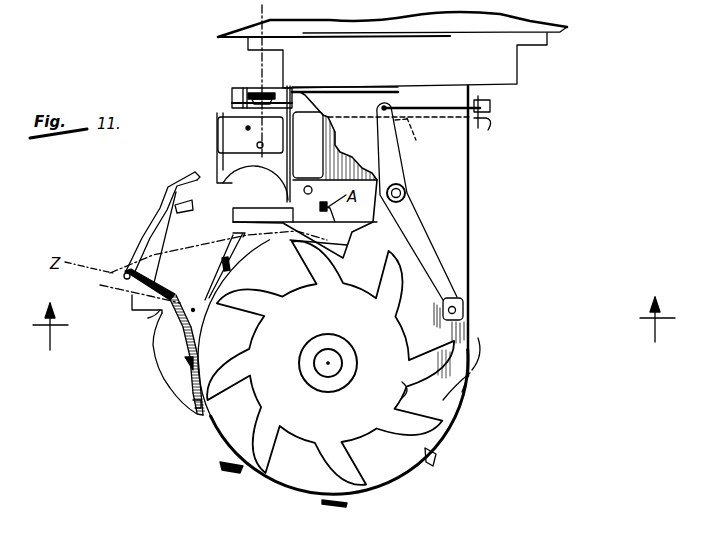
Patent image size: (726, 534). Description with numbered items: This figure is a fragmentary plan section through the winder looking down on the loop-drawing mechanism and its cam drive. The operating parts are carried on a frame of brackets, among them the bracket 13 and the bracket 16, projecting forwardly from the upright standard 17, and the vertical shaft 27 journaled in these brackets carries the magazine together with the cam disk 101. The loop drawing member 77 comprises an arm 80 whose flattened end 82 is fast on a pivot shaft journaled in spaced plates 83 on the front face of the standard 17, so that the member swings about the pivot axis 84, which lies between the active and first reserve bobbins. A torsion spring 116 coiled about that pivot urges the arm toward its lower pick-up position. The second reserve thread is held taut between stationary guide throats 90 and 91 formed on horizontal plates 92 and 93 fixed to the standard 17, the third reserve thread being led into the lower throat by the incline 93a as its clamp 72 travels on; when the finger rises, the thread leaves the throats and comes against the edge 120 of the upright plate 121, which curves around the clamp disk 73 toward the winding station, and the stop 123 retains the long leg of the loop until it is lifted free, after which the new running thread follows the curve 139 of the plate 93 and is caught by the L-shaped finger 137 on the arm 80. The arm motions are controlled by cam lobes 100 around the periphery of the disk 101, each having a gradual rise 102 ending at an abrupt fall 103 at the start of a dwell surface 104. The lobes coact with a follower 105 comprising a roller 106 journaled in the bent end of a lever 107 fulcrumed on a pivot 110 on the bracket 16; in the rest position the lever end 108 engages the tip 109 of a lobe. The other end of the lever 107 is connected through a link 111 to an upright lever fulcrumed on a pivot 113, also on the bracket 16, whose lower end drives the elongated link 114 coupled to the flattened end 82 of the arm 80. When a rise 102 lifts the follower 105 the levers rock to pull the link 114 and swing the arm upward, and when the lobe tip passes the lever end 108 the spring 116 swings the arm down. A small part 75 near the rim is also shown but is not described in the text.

The frame bracket 13 is at (354, 335).
The frame bracket 16 is at (450, 155).
The upright standard 17 is at (414, 71).
The vertical shaft 27 is at (322, 368).
The thread clamp 72 is at (224, 268).
The clamp disk 73 is at (398, 472).
The pawl 75 is at (437, 462).
The loop drawing member 77 is at (305, 175).
The arm 80 is at (319, 151).
The flattened end 82 is at (226, 128).
The spaced plates 83 is at (236, 87).
The pivot axis 84 is at (256, 16).
The upper guide throat 90 is at (170, 295).
The lower guide throat 91 is at (148, 318).
The upper guide plate 92 is at (187, 268).
The lower guide plate 93 is at (165, 350).
The incline 93a is at (168, 380).
The cam lobes 100 is at (260, 437).
The cam disk 101 is at (352, 434).
The gradual rise 102 is at (457, 393).
The abrupt fall 103 is at (343, 262).
The dwell surface 104 is at (395, 390).
The follower 105 is at (471, 310).
The roller 106 is at (468, 287).
The lever 107 is at (435, 257).
The lever end 108 is at (470, 350).
The lobe tip 109 is at (472, 373).
The pivot 110 is at (408, 197).
The link 111 is at (437, 108).
The pivot 113 is at (489, 126).
The elongated link 114 is at (399, 135).
The torsion spring 116 is at (253, 88).
The plate edge 120 is at (123, 287).
The upright stationary plate 121 is at (152, 232).
The stop 123 is at (169, 213).
The L-shaped finger 137 is at (220, 175).
The curve 139 is at (203, 172).